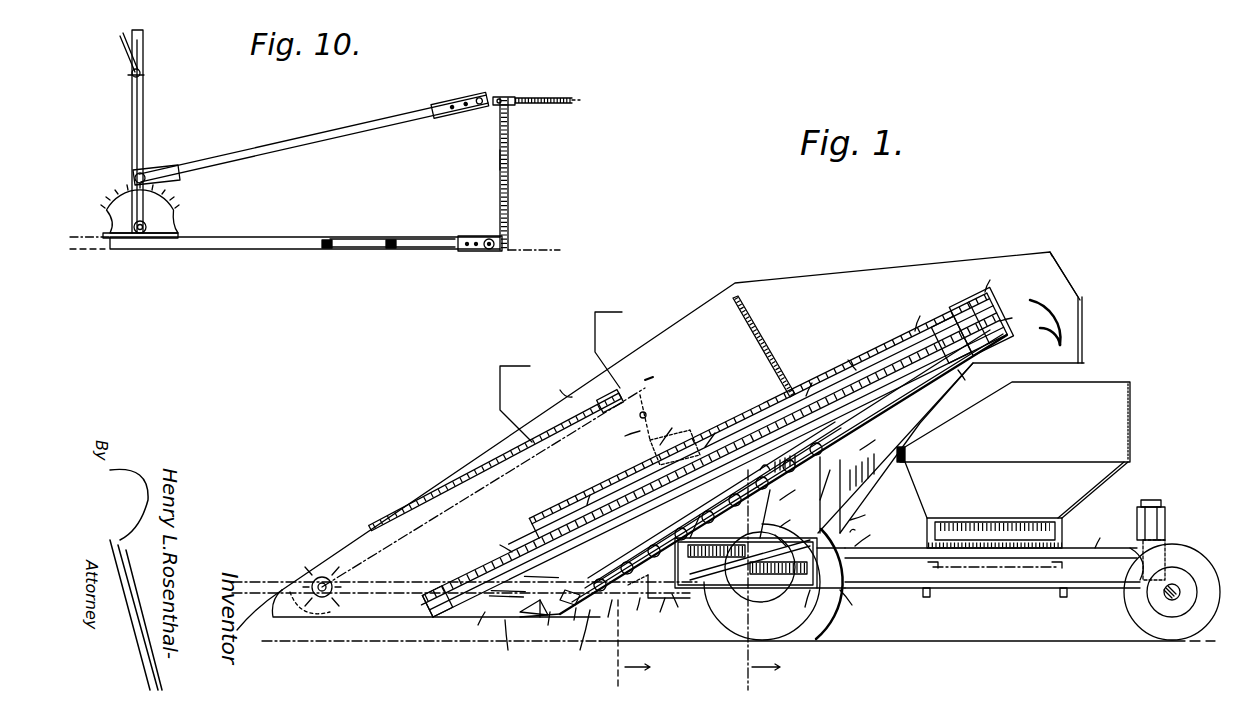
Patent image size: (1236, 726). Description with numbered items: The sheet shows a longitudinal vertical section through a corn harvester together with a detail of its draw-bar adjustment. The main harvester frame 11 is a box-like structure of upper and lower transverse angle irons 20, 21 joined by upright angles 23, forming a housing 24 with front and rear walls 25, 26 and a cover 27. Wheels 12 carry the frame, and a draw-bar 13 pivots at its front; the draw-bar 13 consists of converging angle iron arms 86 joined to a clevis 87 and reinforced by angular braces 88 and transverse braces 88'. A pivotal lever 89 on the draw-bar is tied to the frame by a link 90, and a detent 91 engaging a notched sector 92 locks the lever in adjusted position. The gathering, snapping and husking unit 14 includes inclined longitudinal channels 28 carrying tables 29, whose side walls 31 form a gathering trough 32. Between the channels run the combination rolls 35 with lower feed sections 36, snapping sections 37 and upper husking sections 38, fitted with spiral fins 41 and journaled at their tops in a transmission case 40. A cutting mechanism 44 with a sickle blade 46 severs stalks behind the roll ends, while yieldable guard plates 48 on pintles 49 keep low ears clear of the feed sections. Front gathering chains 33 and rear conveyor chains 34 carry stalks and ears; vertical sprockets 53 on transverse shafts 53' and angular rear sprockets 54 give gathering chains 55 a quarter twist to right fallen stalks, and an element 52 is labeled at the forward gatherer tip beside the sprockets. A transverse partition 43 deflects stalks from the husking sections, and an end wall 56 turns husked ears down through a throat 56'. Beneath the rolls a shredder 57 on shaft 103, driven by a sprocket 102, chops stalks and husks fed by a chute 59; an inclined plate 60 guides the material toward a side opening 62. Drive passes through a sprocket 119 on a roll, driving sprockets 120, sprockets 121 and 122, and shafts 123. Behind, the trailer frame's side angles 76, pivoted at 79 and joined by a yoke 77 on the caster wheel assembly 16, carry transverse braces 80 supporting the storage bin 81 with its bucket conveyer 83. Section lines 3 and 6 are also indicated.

In FIG. 1, the section line 3- 3 is at (675, 501).
In FIG. 1, the section line 6- 6 is at (564, 527).
In FIG. 1, the main harvester frame 11 is at (679, 610).
In FIG. 1, the wheels 12 is at (745, 638).
In FIG. 10, the draw-bar 13 is at (251, 254).
In FIG. 1, the draw-bar 13 is at (446, 580).
In FIG. 1, the gathering, snapping and husking unit 14 is at (704, 303).
In FIG. 1, the caster wheel assembly 16 is at (1170, 549).
In FIG. 10, the upper transverse angle irons 20 is at (505, 97).
In FIG. 10, the lower transverse angle irons 21 is at (489, 233).
In FIG. 1, the lower transverse angle irons 21 is at (758, 603).
In FIG. 1, the upright angles 23 is at (866, 513).
In FIG. 10, the housing 24 is at (521, 174).
In FIG. 10, the front wall 25 is at (499, 160).
In FIG. 1, the rear wall 26 is at (852, 527).
In FIG. 10, the cover 27 is at (541, 96).
In FIG. 1, the longitudinal channels 28 is at (507, 644).
In FIG. 1, the tables 29 is at (612, 489).
In FIG. 1, the side walls 31 is at (553, 385).
In FIG. 1, the gathering trough 32 is at (514, 512).
In FIG. 1, the front gathering chains 33 is at (494, 543).
In FIG. 1, the rear conveyor chains 34 is at (921, 315).
In FIG. 1, the combination rolls 35 is at (845, 356).
In FIG. 1, the lower feed sections 36 is at (537, 622).
In FIG. 1, the snapping and stalk discharge sections 37 is at (786, 477).
In FIG. 1, the upper husking sections 38 is at (869, 458).
In FIG. 1, the transmission case 40 is at (1016, 316).
In FIG. 1, the spiral fins 41 is at (570, 615).
In FIG. 1, the vertical transverse partition 43 is at (740, 298).
In FIG. 1, the cutting mechanism 44 is at (576, 639).
In FIG. 1, the sickle blade 46 is at (602, 618).
In FIG. 1, the yieldable guard plates 48 is at (589, 492).
In FIG. 1, the pintles 49 is at (473, 627).
In FIG. 1, the guide 52 is at (270, 594).
In FIG. 1, the vertical sprockets 53 is at (471, 497).
In FIG. 1, the transverse shafts 53' is at (323, 614).
In FIG. 1, the rear sprockets 54 is at (660, 381).
In FIG. 1, the gathering chains 55 is at (480, 466).
In FIG. 1, the end wall 56 is at (1078, 307).
In FIG. 1, the throat 56' is at (1045, 330).
In FIG. 1, the rotary chopper or shredder 57 is at (771, 532).
In FIG. 1, the chute 59 is at (860, 495).
In FIG. 1, the inclined plate 60 is at (757, 590).
In FIG. 1, the side opening 62 is at (816, 382).
In FIG. 1, the side angles 76 is at (1118, 550).
In FIG. 1, the yoke 77 is at (1160, 506).
In FIG. 1, the pivotal connection 79 is at (802, 608).
In FIG. 1, the transverse angle braces 80 is at (978, 572).
In FIG. 1, the storage bin 81 is at (1130, 455).
In FIG. 1, the bucket conveyer 83 is at (1005, 522).
In FIG. 10, the angle iron arms 86 is at (423, 237).
In FIG. 10, the clevis 87 is at (488, 252).
In FIG. 1, the clevis 87 is at (635, 602).
In FIG. 10, the angular braces 88 is at (349, 258).
In FIG. 10, the transverse braces 88' is at (402, 257).
In FIG. 10, the pivotal lever 89 is at (149, 116).
In FIG. 10, the link 90 is at (325, 143).
In FIG. 10, the detent 91 is at (128, 171).
In FIG. 10, the notched sector 92 is at (172, 192).
In FIG. 1, the sprocket 102 is at (875, 532).
In FIG. 1, the shredder shaft 103 is at (799, 515).
In FIG. 1, the sprocket 119 is at (972, 383).
In FIG. 1, the driving sprockets 120 is at (996, 277).
In FIG. 1, the sprockets 121 is at (722, 431).
In FIG. 1, the sprockets 122 is at (675, 437).
In FIG. 1, the shafts 123 is at (621, 420).